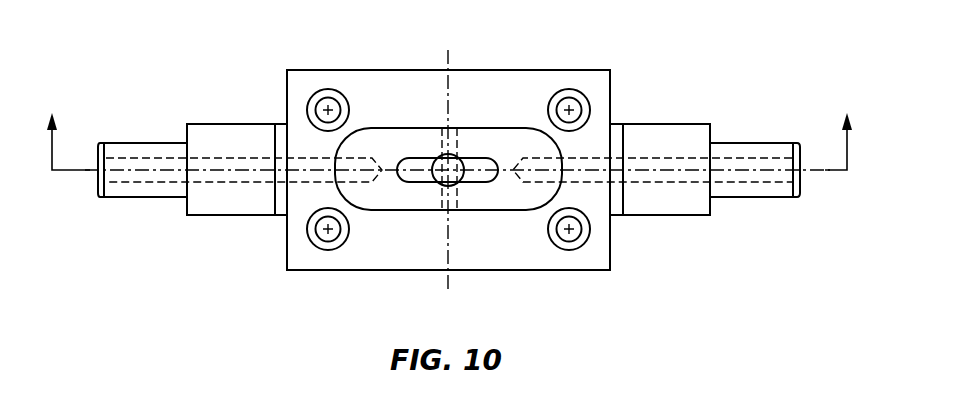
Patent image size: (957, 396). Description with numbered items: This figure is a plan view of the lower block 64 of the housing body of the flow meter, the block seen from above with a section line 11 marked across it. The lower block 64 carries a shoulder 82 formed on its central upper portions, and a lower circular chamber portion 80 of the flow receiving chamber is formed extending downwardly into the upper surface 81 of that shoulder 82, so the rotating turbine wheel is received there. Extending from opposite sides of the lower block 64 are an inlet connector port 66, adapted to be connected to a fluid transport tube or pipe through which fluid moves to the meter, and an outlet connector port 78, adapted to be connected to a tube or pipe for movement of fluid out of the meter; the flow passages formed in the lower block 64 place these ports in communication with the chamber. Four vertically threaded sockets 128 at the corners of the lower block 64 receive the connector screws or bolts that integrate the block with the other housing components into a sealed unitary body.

The section line 11- 11 is at (454, 128).
The lower block 64 is at (184, 40).
The inlet connector port 66 is at (768, 199).
The outlet connector port 78 is at (140, 199).
The lower circular chamber portion 80 is at (418, 165).
The upper surface 81 is at (503, 153).
The shoulder 82 is at (475, 271).
The vertically threaded sockets 128 is at (329, 89).